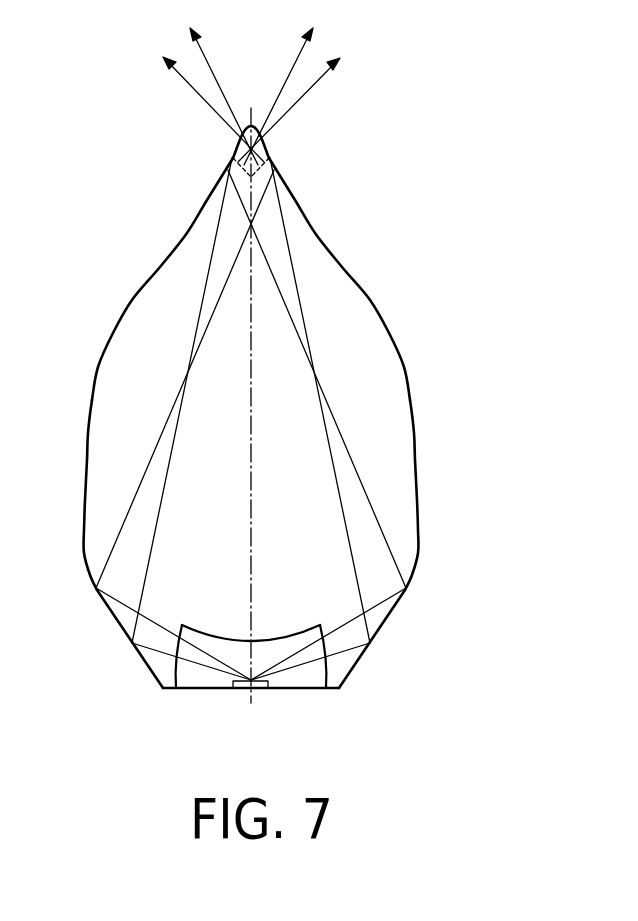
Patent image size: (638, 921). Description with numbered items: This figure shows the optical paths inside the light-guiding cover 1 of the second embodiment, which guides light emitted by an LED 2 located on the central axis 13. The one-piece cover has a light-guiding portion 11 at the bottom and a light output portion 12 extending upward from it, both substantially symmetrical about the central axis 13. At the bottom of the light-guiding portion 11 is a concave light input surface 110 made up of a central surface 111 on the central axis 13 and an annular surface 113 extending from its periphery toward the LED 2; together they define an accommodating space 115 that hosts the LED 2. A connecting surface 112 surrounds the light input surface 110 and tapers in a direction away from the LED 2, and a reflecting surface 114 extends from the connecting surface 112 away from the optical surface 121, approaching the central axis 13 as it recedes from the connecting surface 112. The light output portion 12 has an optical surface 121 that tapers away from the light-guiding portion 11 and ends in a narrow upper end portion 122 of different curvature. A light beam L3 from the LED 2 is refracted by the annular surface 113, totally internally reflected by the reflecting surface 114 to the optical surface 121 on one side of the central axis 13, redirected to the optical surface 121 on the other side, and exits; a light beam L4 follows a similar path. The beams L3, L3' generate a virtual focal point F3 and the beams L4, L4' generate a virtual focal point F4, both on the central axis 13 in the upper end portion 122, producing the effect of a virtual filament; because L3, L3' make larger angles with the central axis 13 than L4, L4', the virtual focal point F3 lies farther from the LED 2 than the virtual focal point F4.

The light-guiding cover 1 is at (103, 306).
The LED 2 is at (234, 687).
The light-guiding portion 11 is at (342, 688).
The light output portion 12 is at (262, 126).
The central axis 13 is at (252, 538).
The light input surface 110 is at (92, 667).
The central surface 111 is at (178, 662).
The connecting surface 112 is at (421, 497).
The annular surface 113 is at (180, 692).
The reflecting surface 114 is at (118, 632).
The accommodating space 115 is at (297, 680).
The optical surface 121 is at (400, 357).
The upper end portion 122 is at (308, 213).
The light beam L3 is at (298, 85).
The light beam L3' is at (206, 85).
The light beam L4 is at (310, 102).
The light beam L4' is at (193, 102).
The virtual focal point F3 is at (248, 148).
The virtual focal point F4 is at (248, 180).